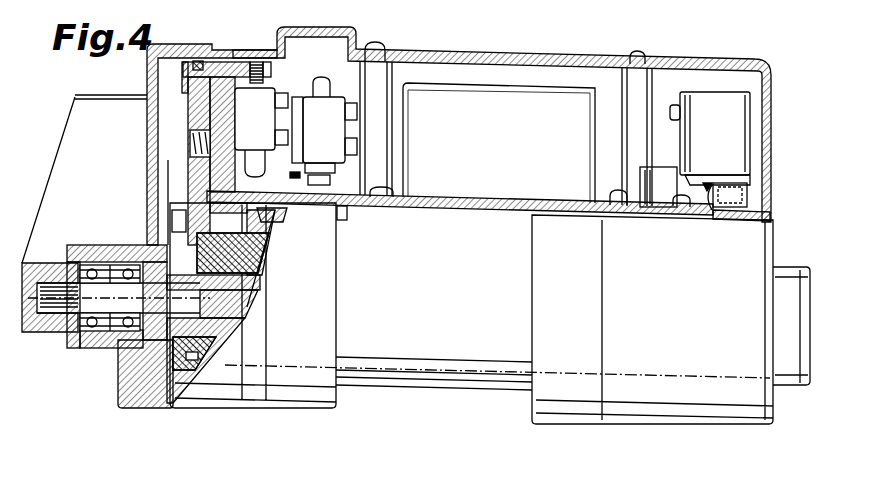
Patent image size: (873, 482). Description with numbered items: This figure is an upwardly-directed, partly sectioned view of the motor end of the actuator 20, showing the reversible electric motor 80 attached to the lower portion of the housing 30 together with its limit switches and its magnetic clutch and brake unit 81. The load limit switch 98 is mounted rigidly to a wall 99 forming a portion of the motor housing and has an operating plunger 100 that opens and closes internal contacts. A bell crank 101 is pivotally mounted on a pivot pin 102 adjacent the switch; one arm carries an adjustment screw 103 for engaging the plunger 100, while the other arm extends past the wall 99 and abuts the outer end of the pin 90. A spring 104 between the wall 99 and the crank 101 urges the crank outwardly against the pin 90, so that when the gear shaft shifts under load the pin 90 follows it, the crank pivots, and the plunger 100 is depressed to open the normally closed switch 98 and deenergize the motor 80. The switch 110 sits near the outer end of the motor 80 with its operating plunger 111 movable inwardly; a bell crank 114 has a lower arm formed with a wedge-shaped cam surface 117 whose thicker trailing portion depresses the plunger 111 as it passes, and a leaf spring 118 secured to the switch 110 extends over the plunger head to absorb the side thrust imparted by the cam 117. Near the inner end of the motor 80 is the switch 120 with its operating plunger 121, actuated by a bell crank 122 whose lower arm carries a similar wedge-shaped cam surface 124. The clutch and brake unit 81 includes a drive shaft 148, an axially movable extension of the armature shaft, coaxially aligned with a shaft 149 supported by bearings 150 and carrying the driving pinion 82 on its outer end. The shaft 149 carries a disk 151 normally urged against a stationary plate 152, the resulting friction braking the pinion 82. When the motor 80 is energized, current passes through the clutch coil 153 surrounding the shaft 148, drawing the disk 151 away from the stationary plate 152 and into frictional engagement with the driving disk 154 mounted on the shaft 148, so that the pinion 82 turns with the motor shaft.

The actuator 20 is at (490, 334).
The housing 30 is at (82, 113).
The reversible electric motor 80 is at (485, 383).
The magnetic clutch and brake unit 81 is at (212, 405).
The driving pinion 82 is at (50, 313).
The pin 90 is at (175, 222).
The load limit switch 98 is at (290, 195).
The wall 99 is at (222, 118).
The operating plunger 100 is at (268, 90).
The bell crank 101 is at (227, 52).
The pivot pin 102 is at (197, 60).
The adjustment screw 103 is at (270, 50).
The spring 104 is at (188, 145).
The switch 110 is at (737, 140).
The operating plunger 111 is at (717, 180).
The bell crank 114 is at (748, 221).
The wedge-shaped cam surface 117 is at (767, 193).
The leaf spring 118 is at (712, 190).
The switch 120 is at (333, 110).
The operating plunger 121 is at (337, 177).
The bell crank 122 is at (345, 220).
The wedge-shaped cam surface 124 is at (337, 170).
The drive shaft 148 is at (230, 307).
The shaft 149 is at (82, 337).
The bearings 150 is at (110, 360).
The disk 151 is at (198, 358).
The stationary plate 152 is at (120, 404).
The clutch coil 153 is at (260, 283).
The driving disk 154 is at (170, 403).